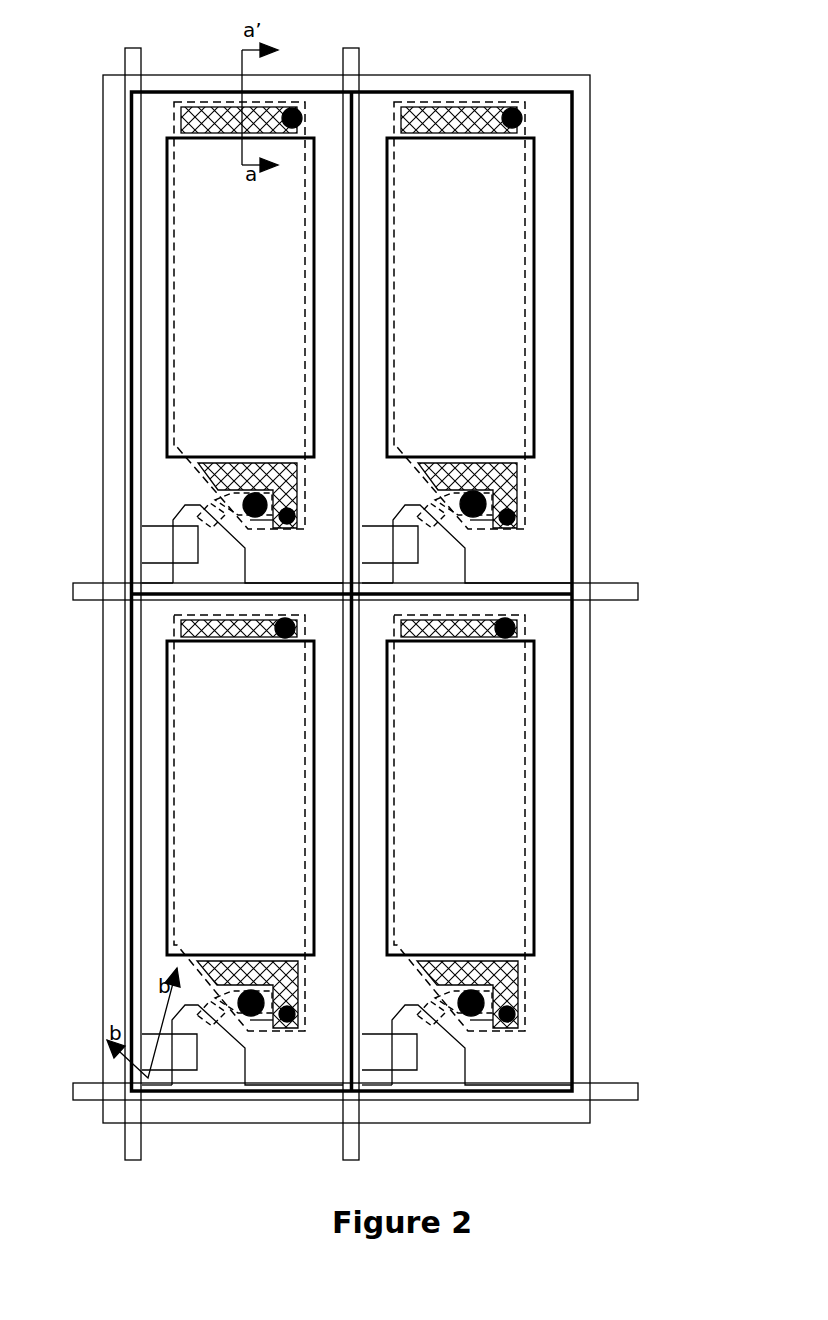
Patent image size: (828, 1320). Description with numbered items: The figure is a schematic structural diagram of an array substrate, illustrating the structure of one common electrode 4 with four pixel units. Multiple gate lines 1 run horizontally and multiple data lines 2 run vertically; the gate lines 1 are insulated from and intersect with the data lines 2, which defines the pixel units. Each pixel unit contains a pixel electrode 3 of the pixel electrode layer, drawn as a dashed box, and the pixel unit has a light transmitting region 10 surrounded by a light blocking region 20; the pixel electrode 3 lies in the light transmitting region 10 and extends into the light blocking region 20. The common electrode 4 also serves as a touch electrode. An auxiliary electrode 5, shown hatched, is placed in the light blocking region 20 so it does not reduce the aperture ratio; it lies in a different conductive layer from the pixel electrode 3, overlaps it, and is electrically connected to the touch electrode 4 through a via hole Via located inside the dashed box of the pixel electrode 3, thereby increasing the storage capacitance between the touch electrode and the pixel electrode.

The gate line 1 is at (607, 582).
The data line 2 is at (360, 68).
The pixel electrode 3 is at (523, 243).
The common electrode 4 is at (423, 74).
The auxiliary electrode 5 is at (518, 493).
The light transmitting region 10 is at (533, 310).
The light blocking region 20 is at (575, 365).
The via hole Via is at (520, 113).